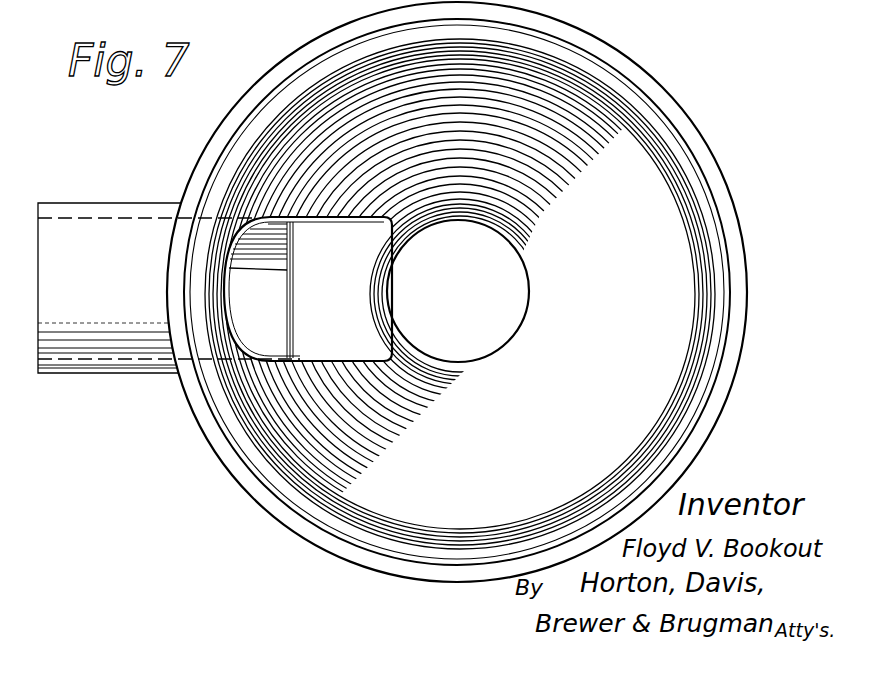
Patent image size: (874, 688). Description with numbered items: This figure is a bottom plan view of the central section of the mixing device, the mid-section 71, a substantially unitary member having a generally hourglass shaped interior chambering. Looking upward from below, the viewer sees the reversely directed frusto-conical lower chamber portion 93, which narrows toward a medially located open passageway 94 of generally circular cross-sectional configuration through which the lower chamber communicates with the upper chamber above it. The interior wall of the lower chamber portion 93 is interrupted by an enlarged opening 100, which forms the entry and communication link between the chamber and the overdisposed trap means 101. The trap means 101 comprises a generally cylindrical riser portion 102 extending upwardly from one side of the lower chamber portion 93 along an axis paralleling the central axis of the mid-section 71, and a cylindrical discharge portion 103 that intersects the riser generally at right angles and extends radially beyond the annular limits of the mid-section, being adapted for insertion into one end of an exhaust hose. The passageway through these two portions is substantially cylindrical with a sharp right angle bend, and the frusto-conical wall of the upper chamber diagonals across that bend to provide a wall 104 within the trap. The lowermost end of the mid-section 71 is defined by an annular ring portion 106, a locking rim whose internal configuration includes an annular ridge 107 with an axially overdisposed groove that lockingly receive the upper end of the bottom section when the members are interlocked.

The mid-section 71 is at (750, 266).
The lower chamber portion 93 is at (663, 236).
The open passageway 94 is at (496, 322).
The enlarged opening 100 is at (333, 223).
The trap means 101 is at (124, 380).
The riser portion 102 is at (228, 302).
The discharge portion 103 is at (95, 203).
The wall 104 is at (342, 283).
The annular ring portion 106 is at (741, 330).
The annular ridge 107 is at (692, 402).